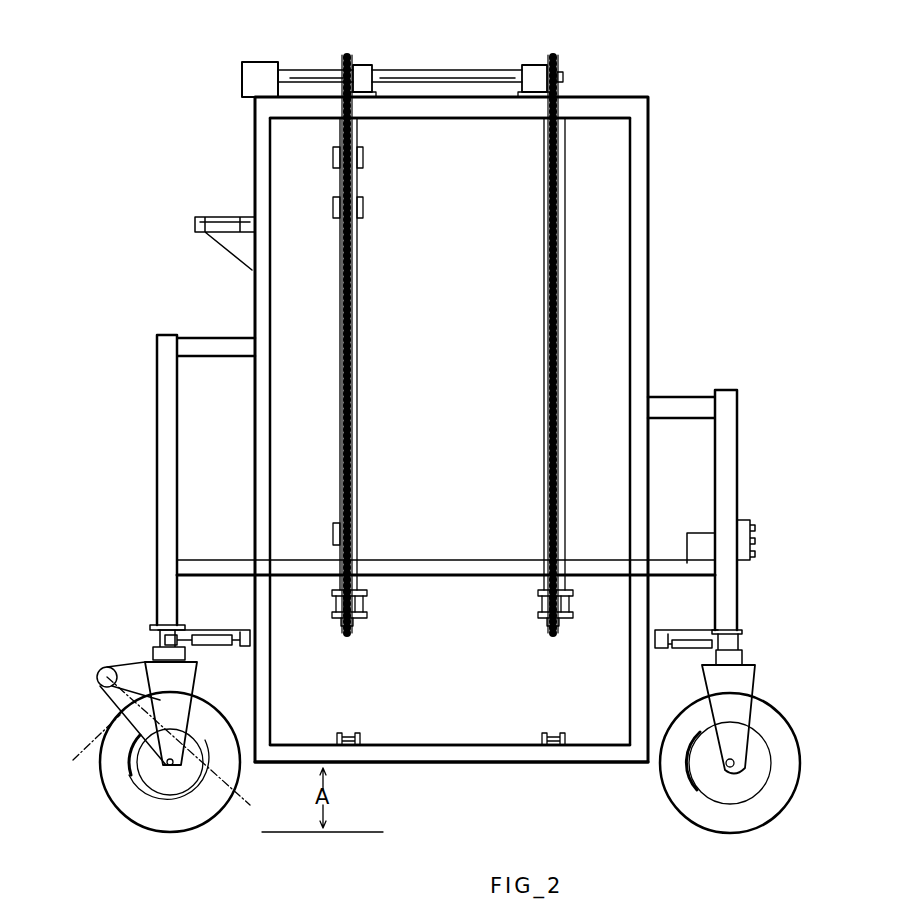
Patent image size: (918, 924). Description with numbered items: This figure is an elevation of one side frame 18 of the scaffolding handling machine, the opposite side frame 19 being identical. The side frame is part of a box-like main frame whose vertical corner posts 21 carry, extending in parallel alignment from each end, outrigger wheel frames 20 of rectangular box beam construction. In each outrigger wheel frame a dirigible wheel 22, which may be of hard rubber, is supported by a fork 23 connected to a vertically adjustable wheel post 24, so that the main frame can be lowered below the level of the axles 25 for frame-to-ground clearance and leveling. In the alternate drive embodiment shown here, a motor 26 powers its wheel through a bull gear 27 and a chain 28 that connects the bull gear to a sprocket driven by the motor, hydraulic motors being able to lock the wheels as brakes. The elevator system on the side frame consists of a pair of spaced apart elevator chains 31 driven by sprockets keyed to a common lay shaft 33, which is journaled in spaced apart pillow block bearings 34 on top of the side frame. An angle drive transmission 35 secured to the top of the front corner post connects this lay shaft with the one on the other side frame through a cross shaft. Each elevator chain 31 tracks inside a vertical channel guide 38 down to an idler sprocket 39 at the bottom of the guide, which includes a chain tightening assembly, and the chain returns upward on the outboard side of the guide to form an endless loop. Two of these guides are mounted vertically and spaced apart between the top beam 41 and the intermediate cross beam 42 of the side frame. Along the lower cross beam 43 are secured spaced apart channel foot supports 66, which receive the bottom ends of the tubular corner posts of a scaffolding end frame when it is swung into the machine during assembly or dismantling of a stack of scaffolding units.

The side frame 18 is at (461, 133).
The side frame 19 is at (523, 762).
The outrigger wheel frame 20 is at (156, 492).
The vertical corner post 21 is at (650, 335).
The dirigible wheel 22 is at (192, 820).
The fork 23 is at (185, 694).
The wheel post 24 is at (160, 633).
The axle 25 is at (168, 766).
The motor 26 is at (98, 670).
The bull gear 27 is at (197, 747).
The chain 28 is at (89, 753).
The elevator chain 31 is at (343, 56).
The lay shaft 33 is at (463, 72).
The pillow block bearing 34 is at (371, 66).
The angle drive transmission 35 is at (250, 70).
The vertical channel guide 38 is at (359, 377).
The idler sprocket 39 is at (351, 630).
The top beam 41 is at (497, 112).
The intermediate cross beam 42 is at (489, 577).
The lower cross beam 43 is at (452, 755).
The channel foot support 66 is at (355, 733).